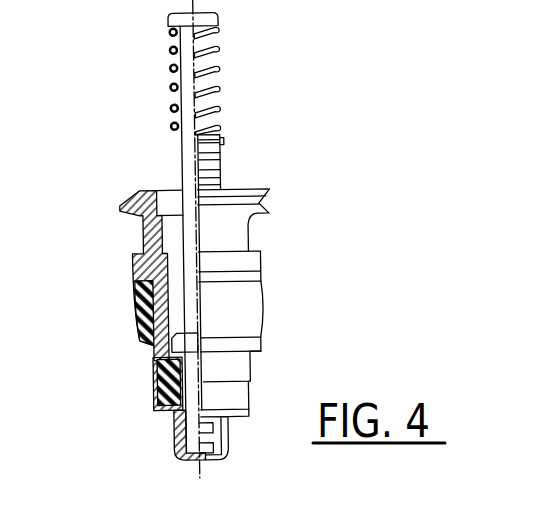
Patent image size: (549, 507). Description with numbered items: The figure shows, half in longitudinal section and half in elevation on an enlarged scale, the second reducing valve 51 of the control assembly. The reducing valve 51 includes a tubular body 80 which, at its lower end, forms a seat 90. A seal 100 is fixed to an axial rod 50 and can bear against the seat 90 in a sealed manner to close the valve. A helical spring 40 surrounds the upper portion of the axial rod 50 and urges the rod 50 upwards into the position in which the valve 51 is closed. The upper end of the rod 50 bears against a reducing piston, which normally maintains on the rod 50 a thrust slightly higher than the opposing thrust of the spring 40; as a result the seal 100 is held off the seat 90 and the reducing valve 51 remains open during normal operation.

The helical spring 40 is at (218, 79).
The axial rod 50 is at (180, 182).
The reducing valve 51 is at (294, 199).
The tubular body 80 is at (128, 203).
The seat 90 is at (158, 364).
The seal 100 is at (152, 392).